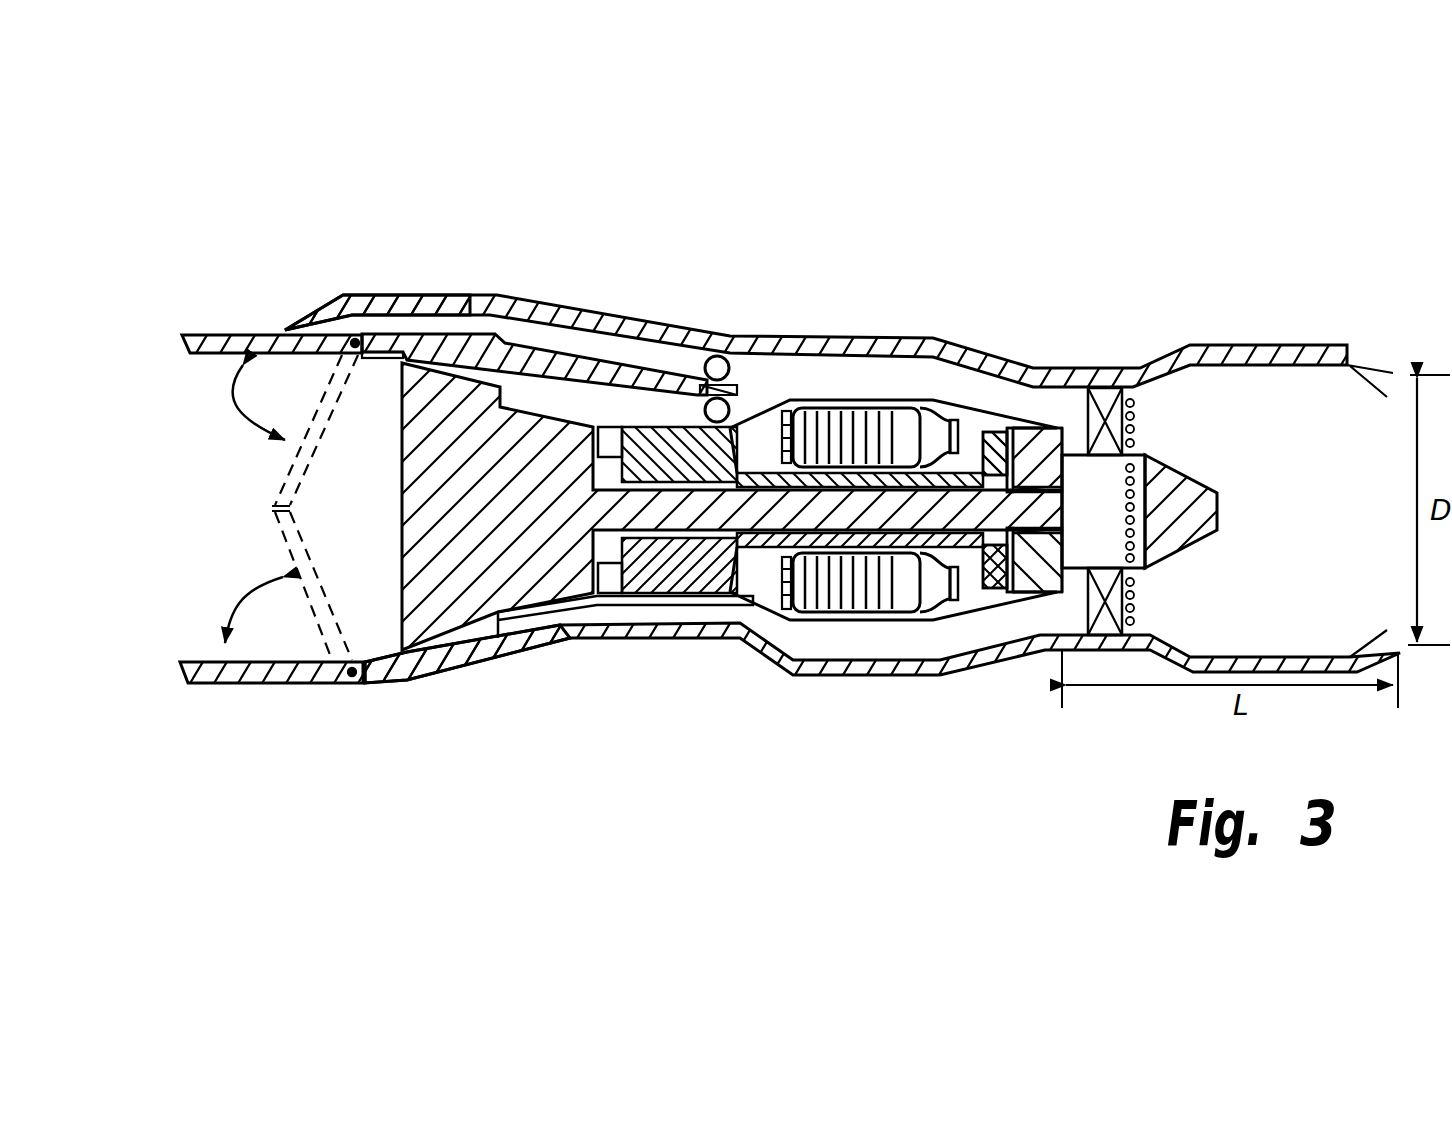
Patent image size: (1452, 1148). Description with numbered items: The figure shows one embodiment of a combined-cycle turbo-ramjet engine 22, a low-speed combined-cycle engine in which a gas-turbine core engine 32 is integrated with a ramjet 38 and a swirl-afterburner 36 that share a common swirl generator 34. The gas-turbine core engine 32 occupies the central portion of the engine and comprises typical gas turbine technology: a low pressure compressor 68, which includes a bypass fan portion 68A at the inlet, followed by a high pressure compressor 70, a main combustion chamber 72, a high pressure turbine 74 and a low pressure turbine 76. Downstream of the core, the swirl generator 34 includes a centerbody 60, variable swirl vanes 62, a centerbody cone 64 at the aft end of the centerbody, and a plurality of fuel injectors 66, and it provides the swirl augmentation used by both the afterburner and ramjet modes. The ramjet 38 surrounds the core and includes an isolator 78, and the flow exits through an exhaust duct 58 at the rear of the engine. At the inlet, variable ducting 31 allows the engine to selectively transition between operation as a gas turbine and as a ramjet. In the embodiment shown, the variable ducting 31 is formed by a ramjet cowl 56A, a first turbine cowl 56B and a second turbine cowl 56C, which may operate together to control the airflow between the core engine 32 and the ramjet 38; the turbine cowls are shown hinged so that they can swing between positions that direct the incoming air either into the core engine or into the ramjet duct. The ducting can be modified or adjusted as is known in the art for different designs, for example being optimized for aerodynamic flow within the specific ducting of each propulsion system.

The combined-cycle turbo-ramjet engine 22 is at (440, 255).
The variable ducting 31 is at (232, 502).
The gas-turbine core engine 32 is at (787, 640).
The swirl generator 34 is at (1180, 570).
The swirl-afterburner 36 is at (1216, 330).
The ramjet 38 is at (548, 337).
The ramjet cowl 56A is at (310, 297).
The first turbine cowl 56B is at (262, 340).
The second turbine cowl 56C is at (280, 670).
The exhaust duct 58 is at (1163, 357).
The centerbody 60 is at (1113, 527).
The variable swirl vanes 62 is at (1112, 420).
The centerbody cone 64 is at (1188, 508).
The fuel injectors 66 is at (1145, 600).
The low pressure compressor 68 is at (547, 580).
The bypass fan portion 68A is at (415, 515).
The high pressure compressor 70 is at (708, 585).
The main combustion chamber 72 is at (877, 583).
The high pressure turbine 74 is at (1000, 587).
The low pressure turbine 76 is at (1033, 565).
The isolator 78 is at (470, 335).